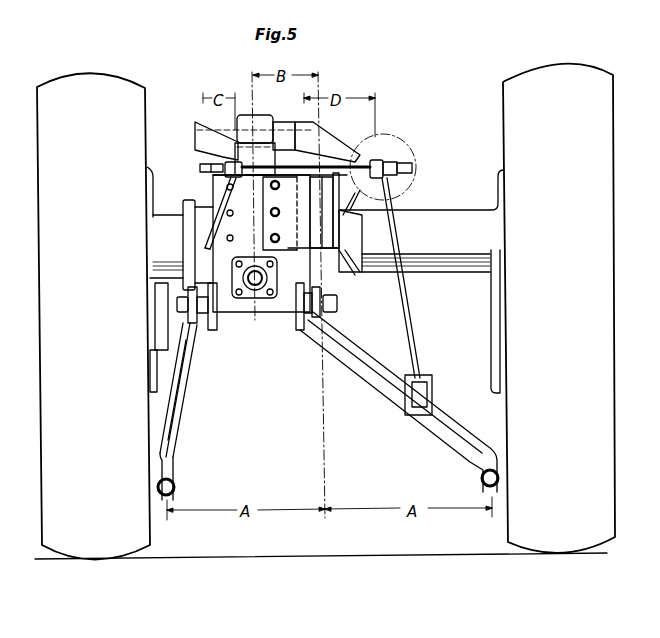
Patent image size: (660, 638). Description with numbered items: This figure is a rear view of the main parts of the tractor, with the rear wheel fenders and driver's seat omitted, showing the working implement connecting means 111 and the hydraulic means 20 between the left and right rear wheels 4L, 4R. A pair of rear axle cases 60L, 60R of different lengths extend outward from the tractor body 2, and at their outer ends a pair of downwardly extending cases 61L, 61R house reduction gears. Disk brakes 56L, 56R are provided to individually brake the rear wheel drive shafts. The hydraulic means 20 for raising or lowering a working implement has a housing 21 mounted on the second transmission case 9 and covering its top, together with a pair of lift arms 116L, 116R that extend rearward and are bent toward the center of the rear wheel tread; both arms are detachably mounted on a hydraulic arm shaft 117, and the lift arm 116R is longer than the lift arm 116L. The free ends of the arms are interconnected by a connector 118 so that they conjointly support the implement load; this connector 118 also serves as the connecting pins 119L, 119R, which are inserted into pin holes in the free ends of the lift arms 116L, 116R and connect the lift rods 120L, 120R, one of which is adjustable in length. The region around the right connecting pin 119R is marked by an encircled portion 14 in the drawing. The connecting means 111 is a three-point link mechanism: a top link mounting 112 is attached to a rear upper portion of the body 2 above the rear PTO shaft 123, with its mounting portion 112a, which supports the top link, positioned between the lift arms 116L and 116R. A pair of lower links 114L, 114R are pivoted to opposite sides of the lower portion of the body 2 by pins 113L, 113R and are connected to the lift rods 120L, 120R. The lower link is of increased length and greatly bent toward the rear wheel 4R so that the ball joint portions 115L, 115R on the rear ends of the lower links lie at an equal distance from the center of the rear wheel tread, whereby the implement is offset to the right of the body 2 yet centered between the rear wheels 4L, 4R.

The tractor body 2 is at (247, 318).
The left rear wheel 4L is at (104, 84).
The right rear wheel 4R is at (510, 84).
The second transmission case 9 is at (227, 308).
The joint portion 14 is at (397, 142).
The hydraulic means 20 is at (260, 112).
The housing 21 is at (283, 125).
The left disk brake 56L is at (197, 225).
The right disk brake 56R is at (339, 278).
The left rear axle case 60L is at (163, 247).
The right rear axle case 60R is at (465, 268).
The left case 61L is at (150, 372).
The right case 61R is at (499, 318).
The working implement connecting means 111 is at (156, 414).
The top link mounting 112 is at (263, 220).
The mounting portion 112a is at (308, 190).
The left pin 113L is at (177, 303).
The right pin 113R is at (338, 303).
The left lower link 114L is at (193, 372).
The right lower link 114R is at (380, 375).
The left ball joint portion 115L is at (175, 478).
The right ball joint portion 115R is at (482, 476).
The left lift arm 116L is at (200, 147).
The right lift arm 116R is at (331, 138).
The hydraulic arm shaft 117 is at (200, 115).
The connector 118 is at (365, 231).
The left connecting pin 119L is at (222, 168).
The right connecting pin 119R is at (413, 158).
The left lift rod 120L is at (218, 208).
The right lift rod 120R is at (393, 203).
The rear PTO shaft 123 is at (268, 297).